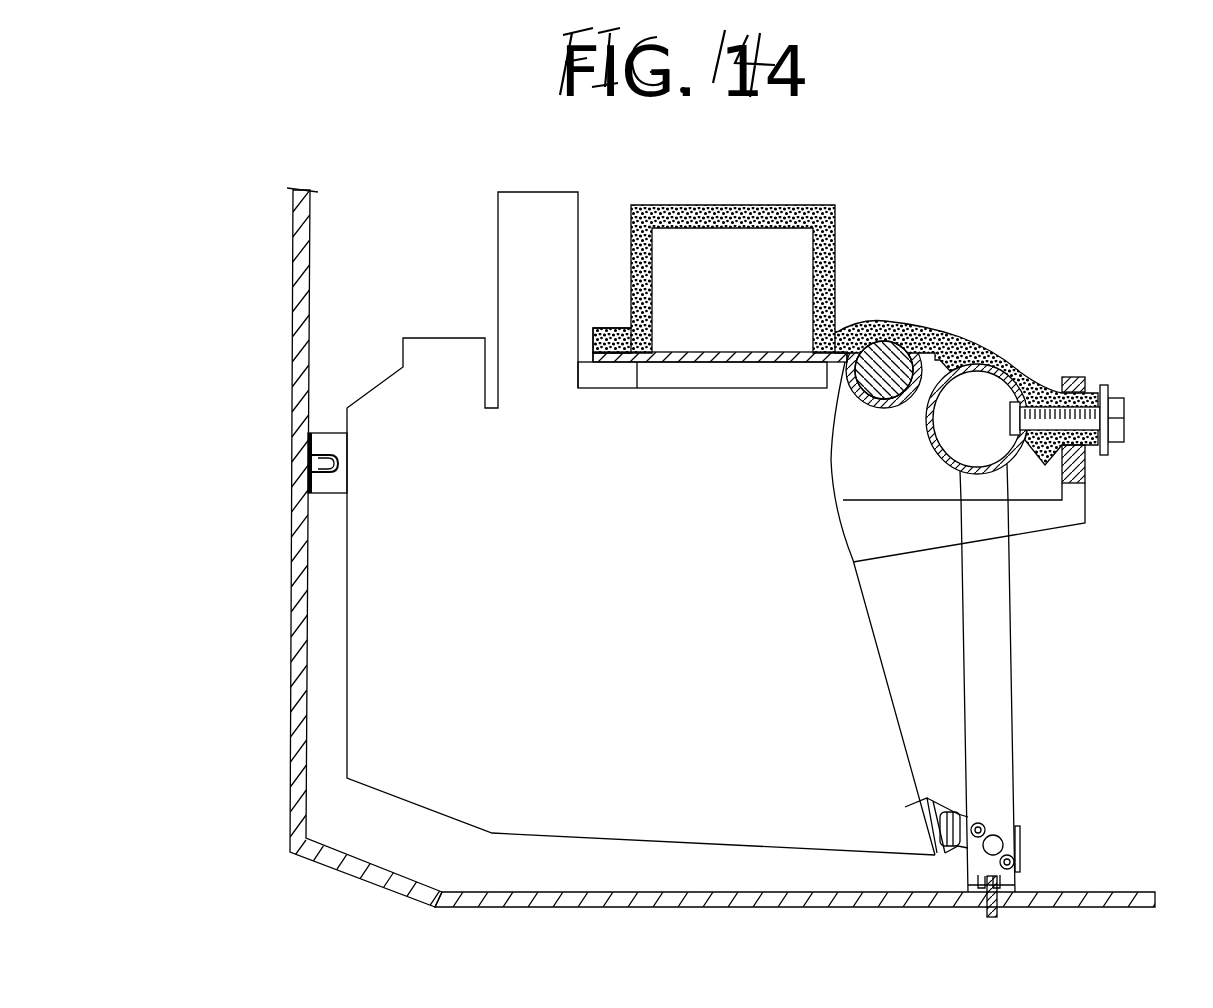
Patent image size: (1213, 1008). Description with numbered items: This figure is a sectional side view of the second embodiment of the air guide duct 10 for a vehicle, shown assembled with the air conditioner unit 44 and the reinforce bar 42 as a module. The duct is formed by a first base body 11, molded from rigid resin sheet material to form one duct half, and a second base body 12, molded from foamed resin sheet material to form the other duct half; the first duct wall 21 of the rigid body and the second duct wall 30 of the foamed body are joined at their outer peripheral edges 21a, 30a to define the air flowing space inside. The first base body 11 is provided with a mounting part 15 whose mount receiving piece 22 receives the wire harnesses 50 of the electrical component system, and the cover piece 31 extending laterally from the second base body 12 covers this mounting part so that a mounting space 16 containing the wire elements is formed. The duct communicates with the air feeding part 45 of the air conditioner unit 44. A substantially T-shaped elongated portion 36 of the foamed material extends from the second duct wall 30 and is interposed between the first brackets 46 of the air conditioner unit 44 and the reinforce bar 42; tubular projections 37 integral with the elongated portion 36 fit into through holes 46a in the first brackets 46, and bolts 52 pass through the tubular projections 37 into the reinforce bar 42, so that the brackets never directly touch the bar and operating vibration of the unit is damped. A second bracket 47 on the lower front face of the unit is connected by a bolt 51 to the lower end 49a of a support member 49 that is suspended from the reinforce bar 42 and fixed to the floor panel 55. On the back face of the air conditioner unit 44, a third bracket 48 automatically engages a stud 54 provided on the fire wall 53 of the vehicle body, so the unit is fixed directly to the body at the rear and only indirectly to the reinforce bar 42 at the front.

The air guide duct 10 is at (866, 216).
The first base body 11 is at (608, 386).
The second base body 12 is at (807, 197).
The mounting part 15 is at (738, 261).
The mounting space 16 is at (880, 405).
The first duct wall 21 is at (683, 366).
The outer peripheral edge 21a is at (603, 373).
The mount receiving piece 22 is at (866, 410).
The second duct wall 30 is at (675, 215).
The outer peripheral edge 30a is at (612, 332).
The cover piece 31 is at (900, 330).
The elongated portion 36 is at (1055, 352).
The tubular projections 37 is at (1100, 450).
The reinforce bar 42 is at (950, 466).
The air conditioner unit 44 is at (336, 612).
The air feeding part 45 is at (742, 374).
The first brackets 46 is at (1052, 522).
The through holes 46a is at (1098, 377).
The second bracket 47 is at (968, 815).
The third bracket 48 is at (324, 440).
The support member 49 is at (992, 686).
The lower end 49a is at (1020, 830).
The wire harnesses 50 is at (918, 334).
The bolt 51 is at (985, 826).
The bolts 52 is at (1130, 423).
The fire wall 53 is at (297, 499).
The stud 54 is at (309, 478).
The floor panel 55 is at (722, 893).